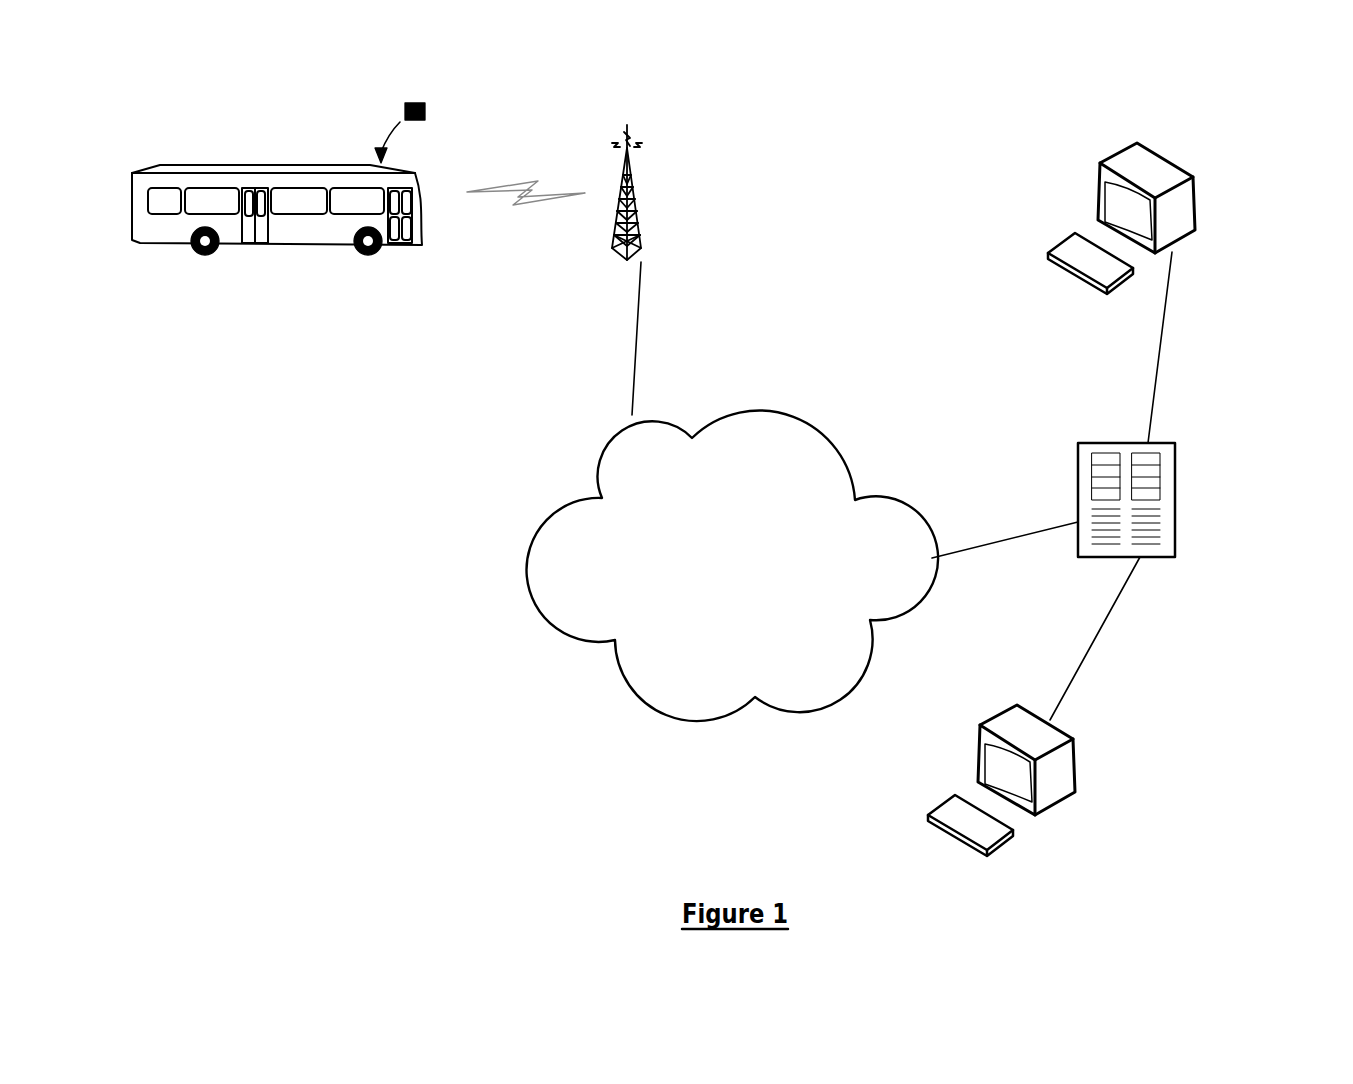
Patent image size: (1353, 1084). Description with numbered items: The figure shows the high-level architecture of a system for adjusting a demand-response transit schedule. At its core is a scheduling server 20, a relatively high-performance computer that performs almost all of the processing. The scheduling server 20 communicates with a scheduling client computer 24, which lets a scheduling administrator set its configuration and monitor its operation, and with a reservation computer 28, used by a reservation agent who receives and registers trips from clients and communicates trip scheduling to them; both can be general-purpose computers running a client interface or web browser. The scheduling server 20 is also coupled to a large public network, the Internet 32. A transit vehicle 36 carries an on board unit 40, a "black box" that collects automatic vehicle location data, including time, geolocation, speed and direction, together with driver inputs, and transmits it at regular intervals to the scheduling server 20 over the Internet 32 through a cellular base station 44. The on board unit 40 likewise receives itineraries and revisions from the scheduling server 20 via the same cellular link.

The scheduling server 20 is at (1175, 480).
The scheduling client computer 24 is at (1195, 192).
The reservation computer 28 is at (1075, 760).
The Internet 32 is at (722, 598).
The transit vehicle 36 is at (192, 162).
The on board unit 40 is at (425, 104).
The cellular base station 44 is at (641, 215).